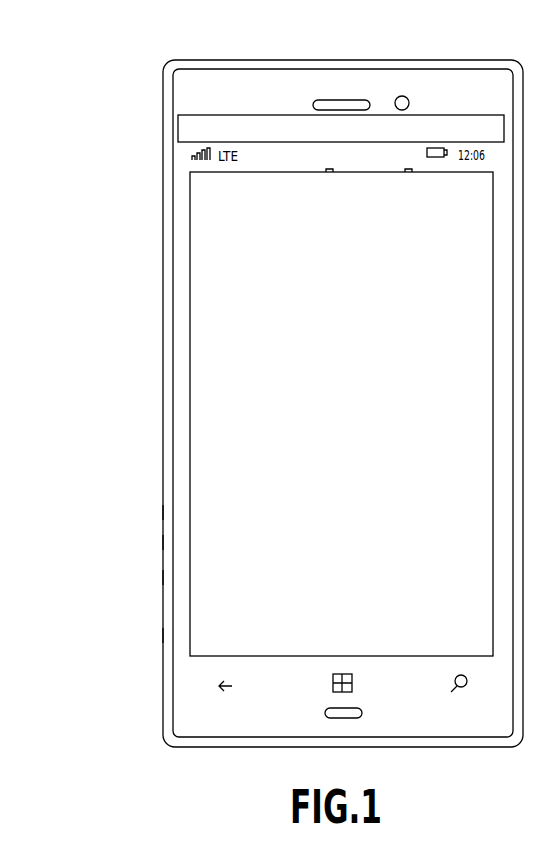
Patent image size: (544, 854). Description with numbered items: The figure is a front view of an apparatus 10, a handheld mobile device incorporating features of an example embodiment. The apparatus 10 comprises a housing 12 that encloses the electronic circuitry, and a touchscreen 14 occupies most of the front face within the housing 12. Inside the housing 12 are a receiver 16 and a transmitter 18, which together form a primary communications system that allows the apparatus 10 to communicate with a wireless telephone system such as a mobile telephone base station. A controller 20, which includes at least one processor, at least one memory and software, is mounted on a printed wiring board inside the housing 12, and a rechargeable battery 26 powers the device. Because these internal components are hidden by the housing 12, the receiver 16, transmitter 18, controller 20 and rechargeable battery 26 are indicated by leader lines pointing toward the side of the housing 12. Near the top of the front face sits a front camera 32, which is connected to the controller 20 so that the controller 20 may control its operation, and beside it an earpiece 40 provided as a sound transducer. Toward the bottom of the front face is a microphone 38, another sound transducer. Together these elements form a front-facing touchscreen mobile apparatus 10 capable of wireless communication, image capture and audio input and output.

The apparatus 10 is at (122, 120).
The housing 12 is at (163, 340).
The touchscreen 14 is at (225, 466).
The receiver 16 is at (161, 512).
The transmitter 18 is at (161, 542).
The controller 20 is at (161, 578).
The rechargeable battery 26 is at (162, 635).
The front camera 32 is at (404, 100).
The microphone 38 is at (348, 718).
The earpiece 40 is at (332, 98).